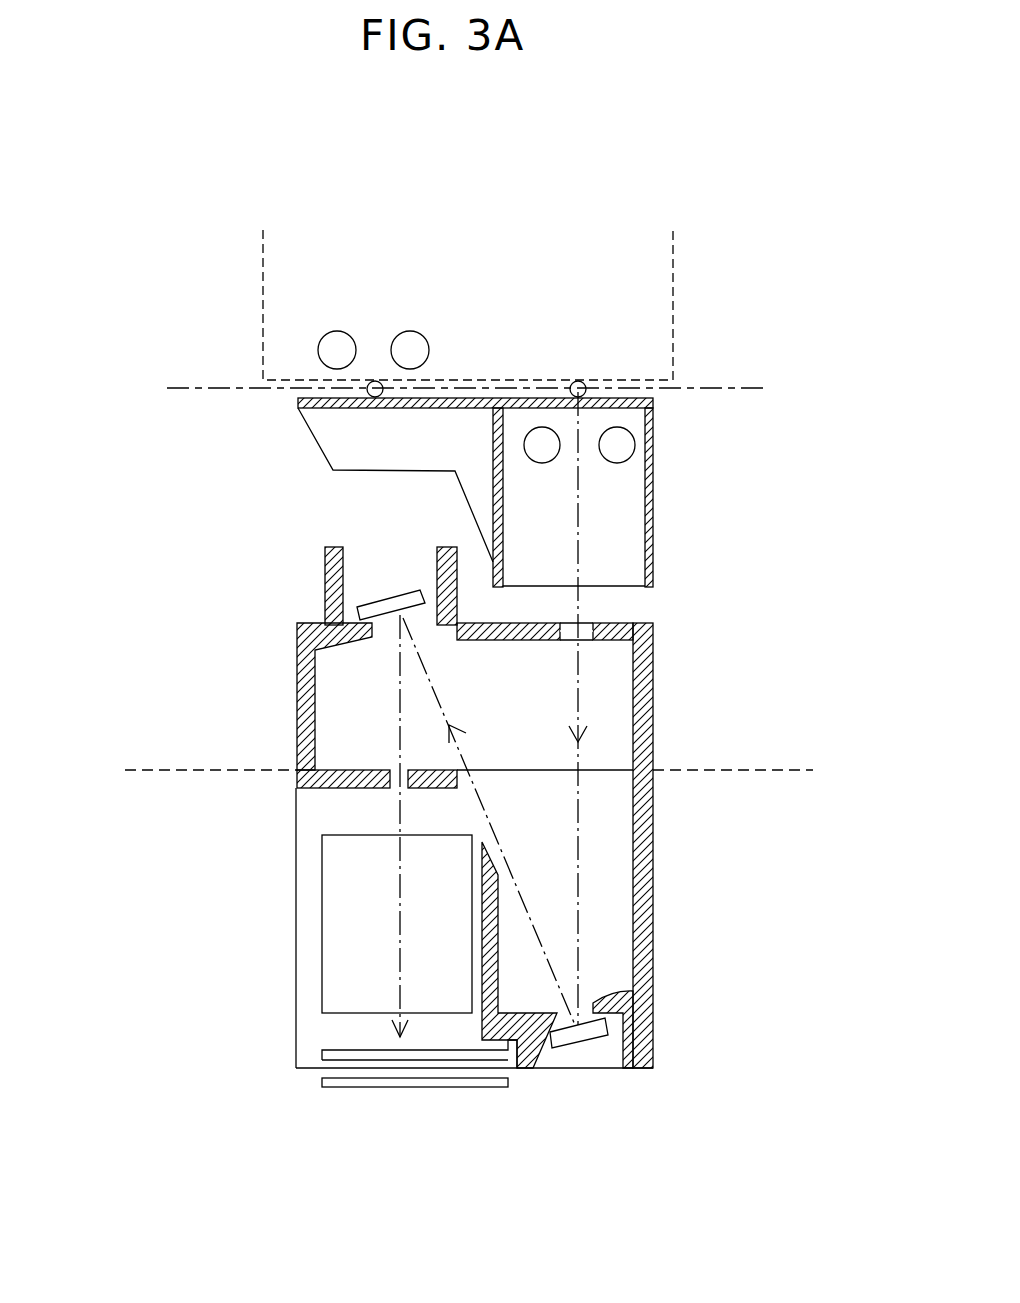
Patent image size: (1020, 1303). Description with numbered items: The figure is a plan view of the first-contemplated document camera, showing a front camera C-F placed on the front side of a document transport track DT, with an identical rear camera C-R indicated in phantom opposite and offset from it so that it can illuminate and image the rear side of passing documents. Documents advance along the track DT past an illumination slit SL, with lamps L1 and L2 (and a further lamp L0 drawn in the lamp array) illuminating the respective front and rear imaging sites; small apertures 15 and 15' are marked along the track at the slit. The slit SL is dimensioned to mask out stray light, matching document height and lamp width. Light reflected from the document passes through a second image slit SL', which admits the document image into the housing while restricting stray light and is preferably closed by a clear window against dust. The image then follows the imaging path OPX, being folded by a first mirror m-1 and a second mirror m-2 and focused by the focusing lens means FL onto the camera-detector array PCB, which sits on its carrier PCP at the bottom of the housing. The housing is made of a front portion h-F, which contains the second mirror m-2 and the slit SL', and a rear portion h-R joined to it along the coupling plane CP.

The rear camera C-R is at (673, 292).
The document transport track DT is at (465, 389).
The lamp L1 is at (340, 332).
The slit aperture 15' is at (410, 336).
The slit aperture 15 is at (597, 340).
The illumination/image slit SL is at (512, 492).
The lamp L2 is at (523, 447).
The lamp L0 is at (623, 462).
The front housing portion h-F is at (652, 742).
The second image slit SL' is at (651, 602).
The second mirror m-2 is at (397, 595).
The imaging path OPX is at (603, 688).
The coupling plane CP is at (469, 770).
The rear housing portion h-R is at (652, 873).
The front camera C-F is at (680, 932).
The focusing lens means FL is at (327, 937).
The first mirror m-1 is at (577, 1040).
The PCP carrier PCP is at (325, 1062).
The camera-detector array PCB is at (413, 1088).